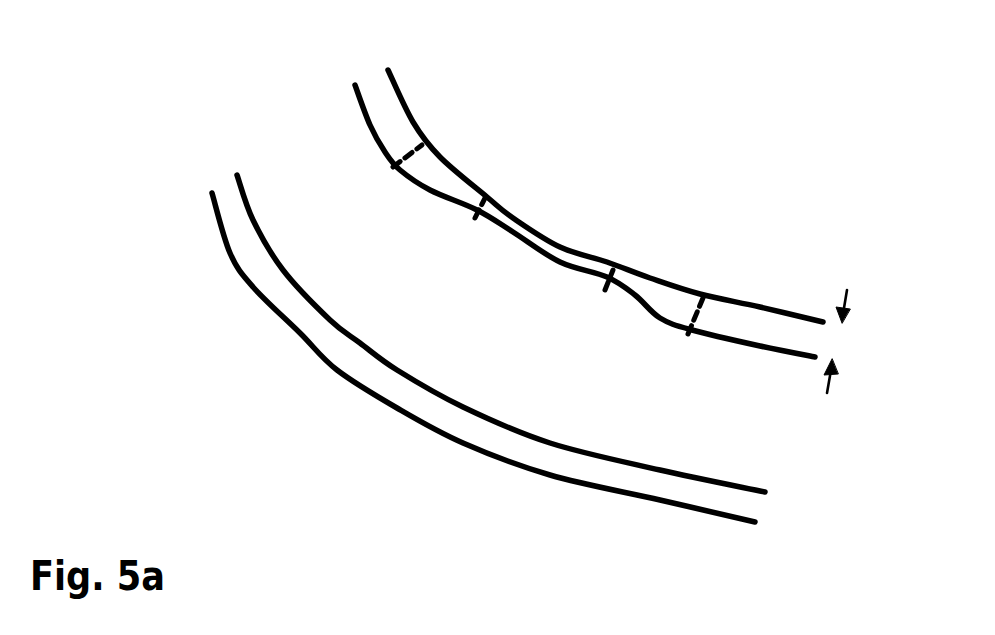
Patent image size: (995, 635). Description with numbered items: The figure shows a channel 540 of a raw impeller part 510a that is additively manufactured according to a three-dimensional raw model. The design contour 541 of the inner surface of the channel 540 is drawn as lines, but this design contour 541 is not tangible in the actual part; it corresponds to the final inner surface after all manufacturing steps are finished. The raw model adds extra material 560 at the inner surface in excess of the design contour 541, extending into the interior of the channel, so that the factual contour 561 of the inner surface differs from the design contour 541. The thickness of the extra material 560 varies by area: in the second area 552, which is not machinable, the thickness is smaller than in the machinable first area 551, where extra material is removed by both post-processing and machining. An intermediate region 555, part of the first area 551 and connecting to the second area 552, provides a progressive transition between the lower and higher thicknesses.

The raw impeller part 510a is at (171, 140).
The channel 540 is at (303, 120).
The design contour 541 is at (255, 290).
The first area 551 is at (440, 35).
The second area 552 is at (615, 262).
The intermediate region 555 is at (455, 230).
The extra material 560 is at (328, 347).
The factual contour 561 is at (521, 243).